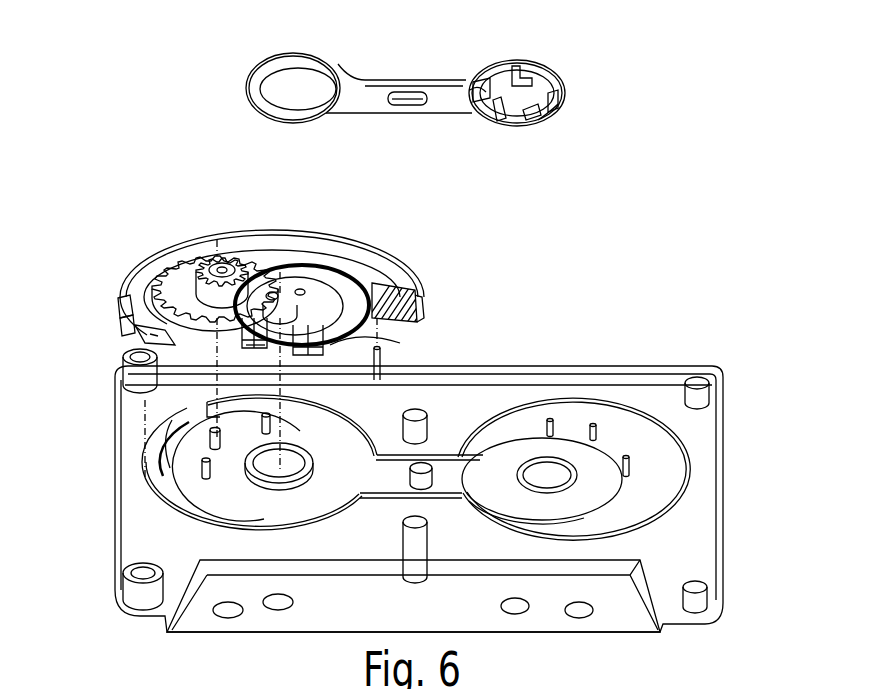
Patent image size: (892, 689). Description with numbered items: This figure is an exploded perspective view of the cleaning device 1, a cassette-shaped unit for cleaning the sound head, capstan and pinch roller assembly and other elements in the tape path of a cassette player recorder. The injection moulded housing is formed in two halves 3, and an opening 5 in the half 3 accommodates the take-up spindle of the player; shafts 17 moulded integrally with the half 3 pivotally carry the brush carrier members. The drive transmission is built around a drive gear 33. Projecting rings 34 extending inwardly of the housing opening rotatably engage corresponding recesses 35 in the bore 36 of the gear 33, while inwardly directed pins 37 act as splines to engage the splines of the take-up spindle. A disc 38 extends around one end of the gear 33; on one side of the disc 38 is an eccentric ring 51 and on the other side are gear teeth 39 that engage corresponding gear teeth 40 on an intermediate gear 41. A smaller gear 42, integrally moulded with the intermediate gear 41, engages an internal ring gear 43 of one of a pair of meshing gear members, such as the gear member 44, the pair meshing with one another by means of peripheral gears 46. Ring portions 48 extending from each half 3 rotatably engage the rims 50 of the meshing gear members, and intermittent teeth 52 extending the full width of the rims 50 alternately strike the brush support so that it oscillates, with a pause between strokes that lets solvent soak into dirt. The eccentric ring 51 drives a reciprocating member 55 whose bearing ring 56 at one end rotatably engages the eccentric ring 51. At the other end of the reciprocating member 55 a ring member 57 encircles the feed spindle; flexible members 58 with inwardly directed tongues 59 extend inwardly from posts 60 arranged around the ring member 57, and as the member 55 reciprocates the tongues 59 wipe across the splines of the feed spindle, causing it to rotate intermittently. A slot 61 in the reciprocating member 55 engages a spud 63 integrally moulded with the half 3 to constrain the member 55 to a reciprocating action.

The cleaning device 1 is at (685, 324).
The housing half 3 is at (685, 553).
The opening 5 is at (286, 462).
The shafts 17 is at (140, 595).
The drive gear 33 is at (385, 352).
The projecting rings 34 is at (302, 510).
The recesses 35 is at (365, 275).
The bore 36 is at (387, 283).
The pins 37 is at (282, 263).
The disc 38 is at (400, 320).
The gear teeth 39 is at (250, 348).
The gear teeth 40 is at (190, 379).
The intermediate gear 41 is at (212, 262).
The smaller gear 42 is at (184, 276).
The internal ring gear 43 is at (170, 262).
The meshing gear member 44 is at (150, 298).
The peripheral gears 46 is at (120, 325).
The ring portions 48 is at (435, 392).
The rims 50 is at (250, 240).
The eccentric ring 51 is at (400, 343).
The intermittent teeth 52 is at (187, 276).
The reciprocating member 55 is at (364, 96).
The bearing ring 56 is at (297, 64).
The ring member 57 is at (560, 80).
The flexible members 58 is at (487, 77).
The tongues 59 is at (493, 100).
The posts 60 is at (470, 98).
The slot 61 is at (403, 105).
The spud 63 is at (424, 466).